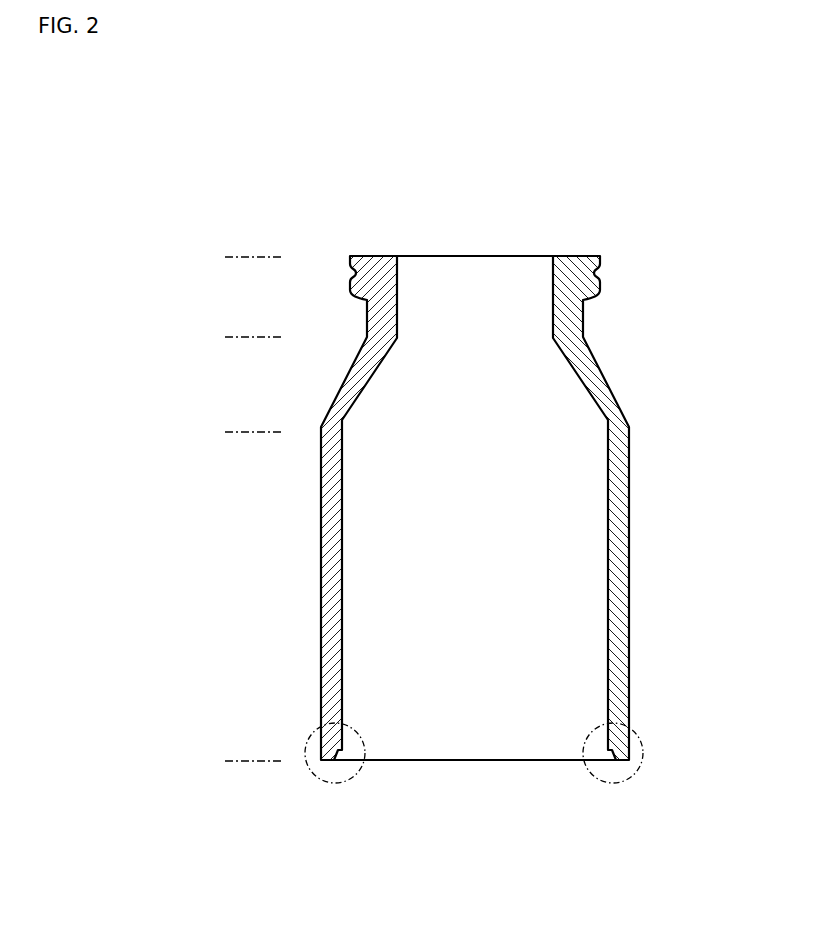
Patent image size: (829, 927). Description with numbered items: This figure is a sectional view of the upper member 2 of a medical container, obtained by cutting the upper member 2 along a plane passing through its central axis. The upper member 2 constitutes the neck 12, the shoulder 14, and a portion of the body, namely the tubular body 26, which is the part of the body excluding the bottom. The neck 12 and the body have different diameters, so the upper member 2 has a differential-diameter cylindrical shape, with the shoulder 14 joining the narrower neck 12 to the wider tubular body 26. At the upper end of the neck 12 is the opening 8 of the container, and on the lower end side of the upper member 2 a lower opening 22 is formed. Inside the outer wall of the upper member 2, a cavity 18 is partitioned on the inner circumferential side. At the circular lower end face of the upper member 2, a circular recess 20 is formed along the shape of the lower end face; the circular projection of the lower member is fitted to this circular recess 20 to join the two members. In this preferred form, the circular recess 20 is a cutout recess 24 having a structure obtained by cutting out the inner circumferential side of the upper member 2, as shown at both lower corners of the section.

The upper member 2 is at (598, 383).
The opening 8 is at (470, 234).
The neck 12 is at (201, 257).
The shoulder 14 is at (201, 339).
The cavity 18 is at (550, 563).
The circular recess 20 is at (343, 774).
The lower opening 22 is at (489, 768).
The cutout recess 24 is at (612, 774).
The tubular body 26 is at (201, 434).